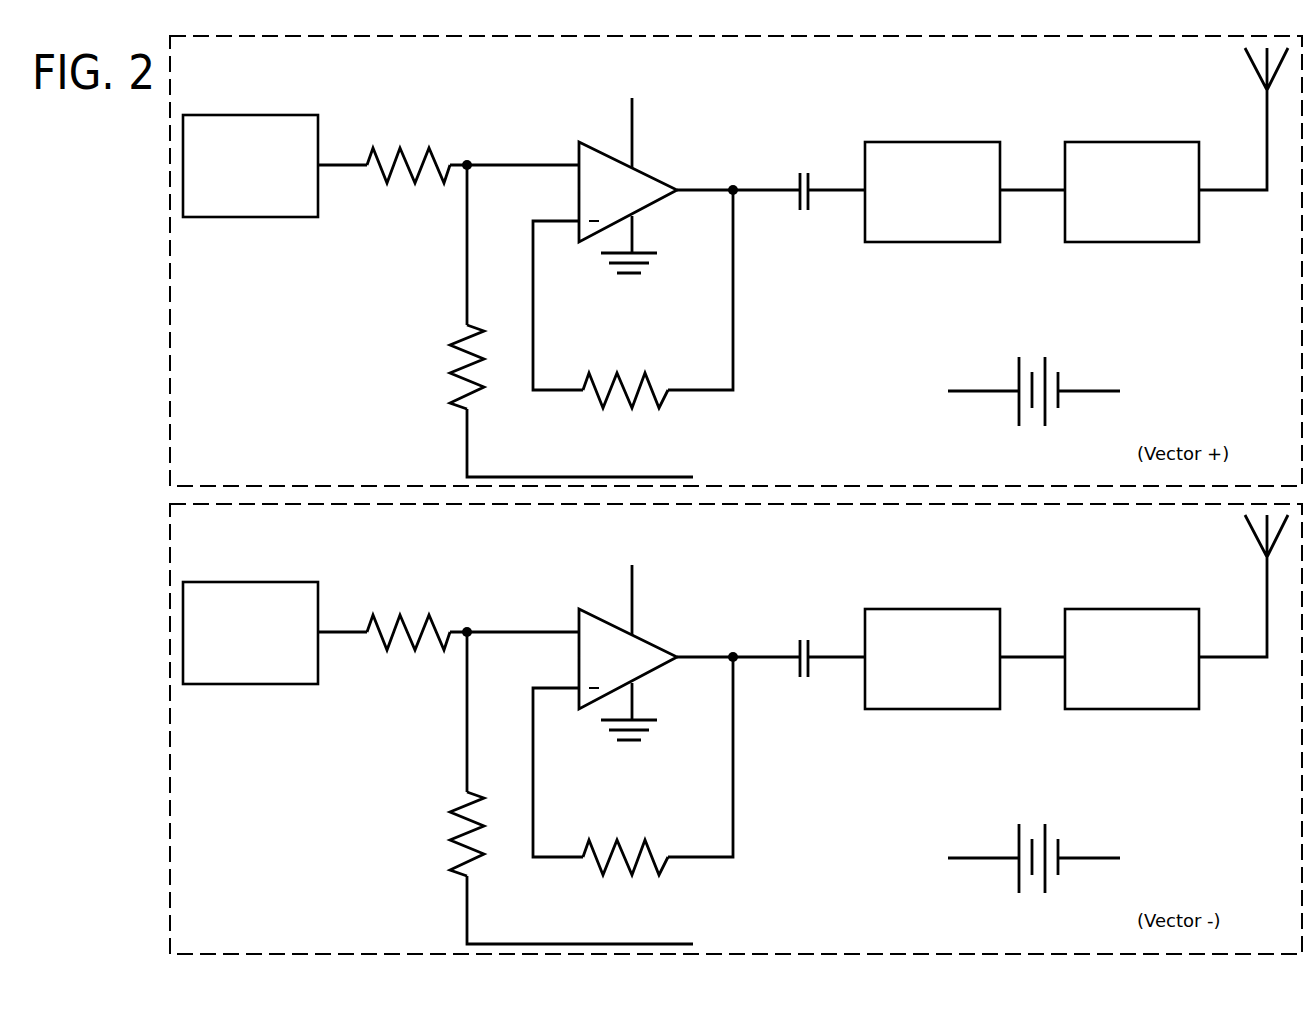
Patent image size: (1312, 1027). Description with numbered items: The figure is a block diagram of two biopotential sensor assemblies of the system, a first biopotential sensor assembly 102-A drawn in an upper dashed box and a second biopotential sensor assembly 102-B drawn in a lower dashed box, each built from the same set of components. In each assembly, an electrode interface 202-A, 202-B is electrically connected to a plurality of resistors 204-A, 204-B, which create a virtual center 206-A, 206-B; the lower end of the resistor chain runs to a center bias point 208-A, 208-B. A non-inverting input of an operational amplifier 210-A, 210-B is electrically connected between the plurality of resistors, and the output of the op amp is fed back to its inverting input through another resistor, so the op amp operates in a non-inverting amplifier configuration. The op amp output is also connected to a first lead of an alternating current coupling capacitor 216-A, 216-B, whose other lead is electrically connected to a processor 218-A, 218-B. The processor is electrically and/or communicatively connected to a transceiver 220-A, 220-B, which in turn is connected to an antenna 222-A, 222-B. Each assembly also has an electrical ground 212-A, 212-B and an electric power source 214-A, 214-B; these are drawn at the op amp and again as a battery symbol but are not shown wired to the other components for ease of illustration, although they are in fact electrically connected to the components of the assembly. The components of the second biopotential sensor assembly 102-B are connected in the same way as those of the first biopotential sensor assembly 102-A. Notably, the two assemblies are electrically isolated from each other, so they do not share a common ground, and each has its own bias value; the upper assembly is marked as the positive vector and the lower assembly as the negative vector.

The first biopotential sensor assembly 102-A is at (170, 263).
The second biopotential sensor assembly 102-B is at (673, 729).
The electrode interface 202-A is at (250, 166).
The electrode interface 202-B is at (250, 633).
The plurality of resistors 204-A is at (416, 119).
The plurality of resistors 204-B is at (396, 713).
The virtual center 206-A is at (467, 255).
The virtual center 206-B is at (405, 712).
The center bias point 208-A is at (575, 477).
The center bias point 208-B is at (580, 910).
The operational amplifier 210-A is at (583, 123).
The operational amplifier 210-B is at (578, 628).
The electrical ground 212-A is at (622, 288).
The electrical ground 212-B is at (916, 788).
The electric power source 214-A is at (632, 87).
The electric power source 214-B is at (832, 701).
The AC coupling capacitor 216-A is at (803, 153).
The AC coupling capacitor 216-B is at (771, 627).
The processor 218-A is at (932, 192).
The processor 218-B is at (932, 659).
The transceiver 220-A is at (1099, 192).
The transceiver 220-B is at (1099, 659).
The antenna 222-A is at (1237, 75).
The antenna 222-B is at (1200, 586).